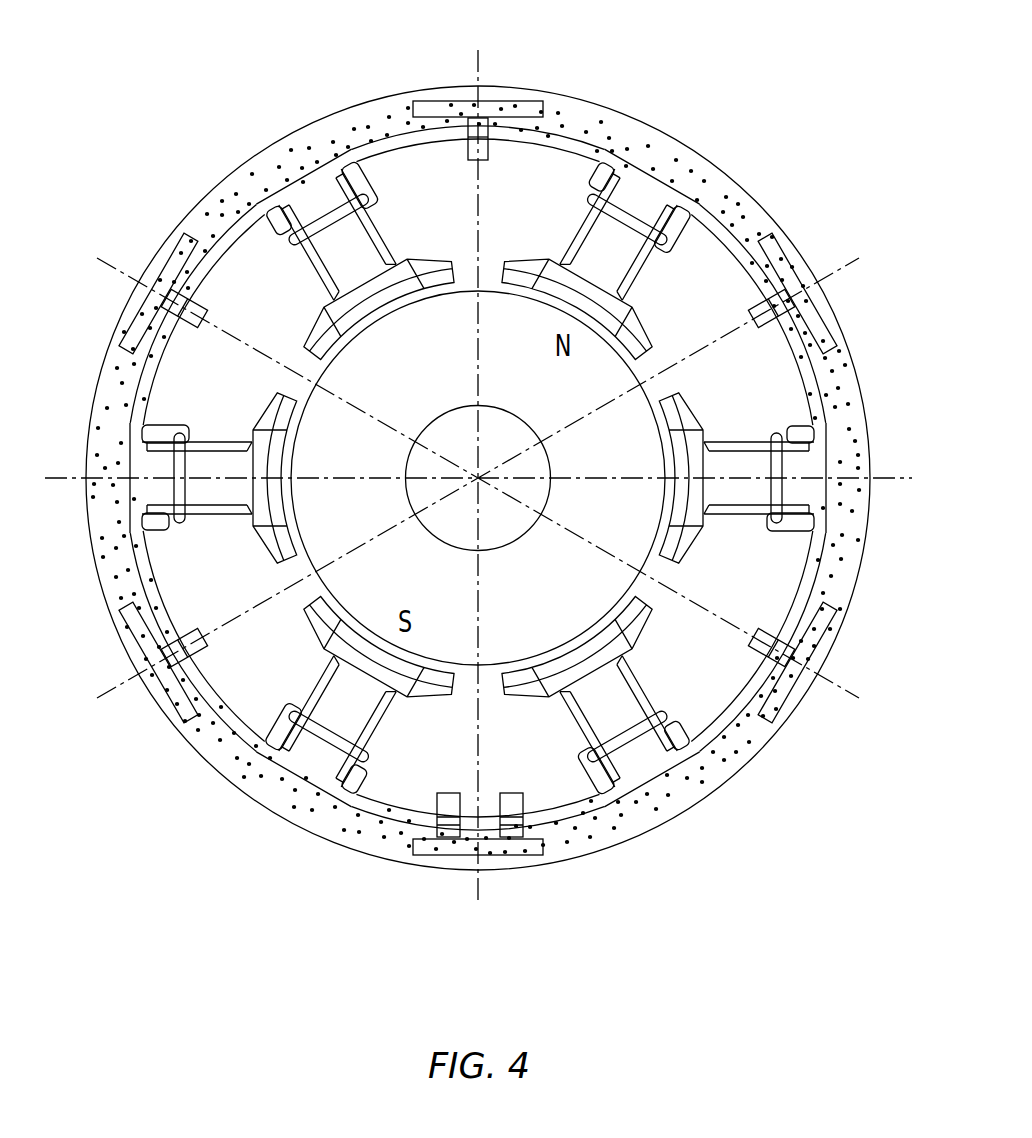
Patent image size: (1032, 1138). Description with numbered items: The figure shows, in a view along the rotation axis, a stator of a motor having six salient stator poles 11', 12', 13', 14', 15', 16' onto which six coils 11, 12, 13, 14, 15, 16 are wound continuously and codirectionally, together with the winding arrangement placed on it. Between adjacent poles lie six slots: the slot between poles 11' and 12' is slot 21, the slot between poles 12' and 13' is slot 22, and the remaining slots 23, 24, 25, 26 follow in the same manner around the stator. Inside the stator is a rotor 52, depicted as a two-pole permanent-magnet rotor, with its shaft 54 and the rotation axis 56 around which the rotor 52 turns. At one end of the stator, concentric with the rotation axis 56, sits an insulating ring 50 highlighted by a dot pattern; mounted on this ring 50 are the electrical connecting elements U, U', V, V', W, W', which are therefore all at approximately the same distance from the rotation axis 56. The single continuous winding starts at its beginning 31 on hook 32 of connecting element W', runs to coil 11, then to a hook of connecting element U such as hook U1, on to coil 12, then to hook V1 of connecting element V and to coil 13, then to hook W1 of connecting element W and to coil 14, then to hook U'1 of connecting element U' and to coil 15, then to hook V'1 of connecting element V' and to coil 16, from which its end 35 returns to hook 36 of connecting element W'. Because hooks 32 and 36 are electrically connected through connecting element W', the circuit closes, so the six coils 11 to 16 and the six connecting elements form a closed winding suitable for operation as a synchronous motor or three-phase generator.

The coil 11 is at (615, 687).
The coil 12 is at (728, 469).
The coil 13 is at (614, 267).
The coil 14 is at (343, 267).
The coil 15 is at (231, 491).
The coil 16 is at (356, 687).
The salient stator pole 11' is at (630, 702).
The salient stator pole 12' is at (759, 444).
The salient stator pole 13' is at (586, 234).
The salient stator pole 14' is at (370, 234).
The salient stator pole 15' is at (198, 444).
The salient stator pole 16' is at (337, 709).
The slot 21 is at (711, 565).
The slot 22 is at (667, 335).
The slot 23 is at (405, 200).
The slot 24 is at (268, 335).
The slot 25 is at (223, 592).
The slot 26 is at (510, 737).
The beginning of the continuous winding 31 is at (578, 816).
The hook 32 is at (512, 795).
The end of the continuous winding 35 is at (384, 816).
The hook 36 is at (452, 795).
The insulating ring 50 is at (650, 150).
The rotor 52 is at (608, 456).
The shaft 54 is at (527, 420).
The rotation axis 56 is at (477, 477).
The connecting element U is at (848, 662).
The connecting element V is at (823, 274).
The connecting element W is at (478, 60).
The connecting element U' is at (127, 274).
The connecting element V' is at (114, 662).
The connecting element W' is at (487, 902).
The hook U1 is at (760, 632).
The hook V1 is at (765, 325).
The hook W1 is at (485, 150).
The hook U'1 is at (184, 346).
The hook V'1 is at (209, 650).